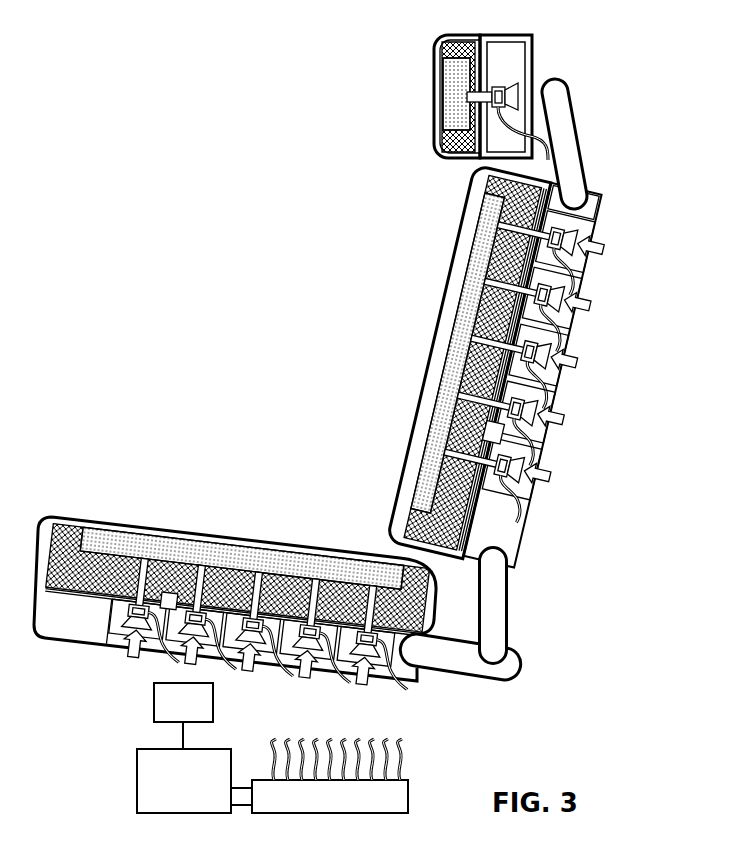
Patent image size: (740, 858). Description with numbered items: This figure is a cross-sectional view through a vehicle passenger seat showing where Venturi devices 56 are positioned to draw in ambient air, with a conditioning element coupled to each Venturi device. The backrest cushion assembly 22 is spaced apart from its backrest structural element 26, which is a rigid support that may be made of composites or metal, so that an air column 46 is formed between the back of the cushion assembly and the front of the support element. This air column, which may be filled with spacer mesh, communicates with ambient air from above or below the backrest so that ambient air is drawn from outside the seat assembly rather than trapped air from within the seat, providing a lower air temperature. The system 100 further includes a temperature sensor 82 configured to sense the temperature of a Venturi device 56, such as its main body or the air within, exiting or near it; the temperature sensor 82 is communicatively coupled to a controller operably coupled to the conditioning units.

The backrest assembly 22 is at (553, 184).
The backrest structural element 26 is at (593, 210).
The air column 46 is at (573, 217).
The Venturi device 56 is at (567, 287).
The temperature sensor 82 is at (458, 413).
The system 100 is at (115, 768).